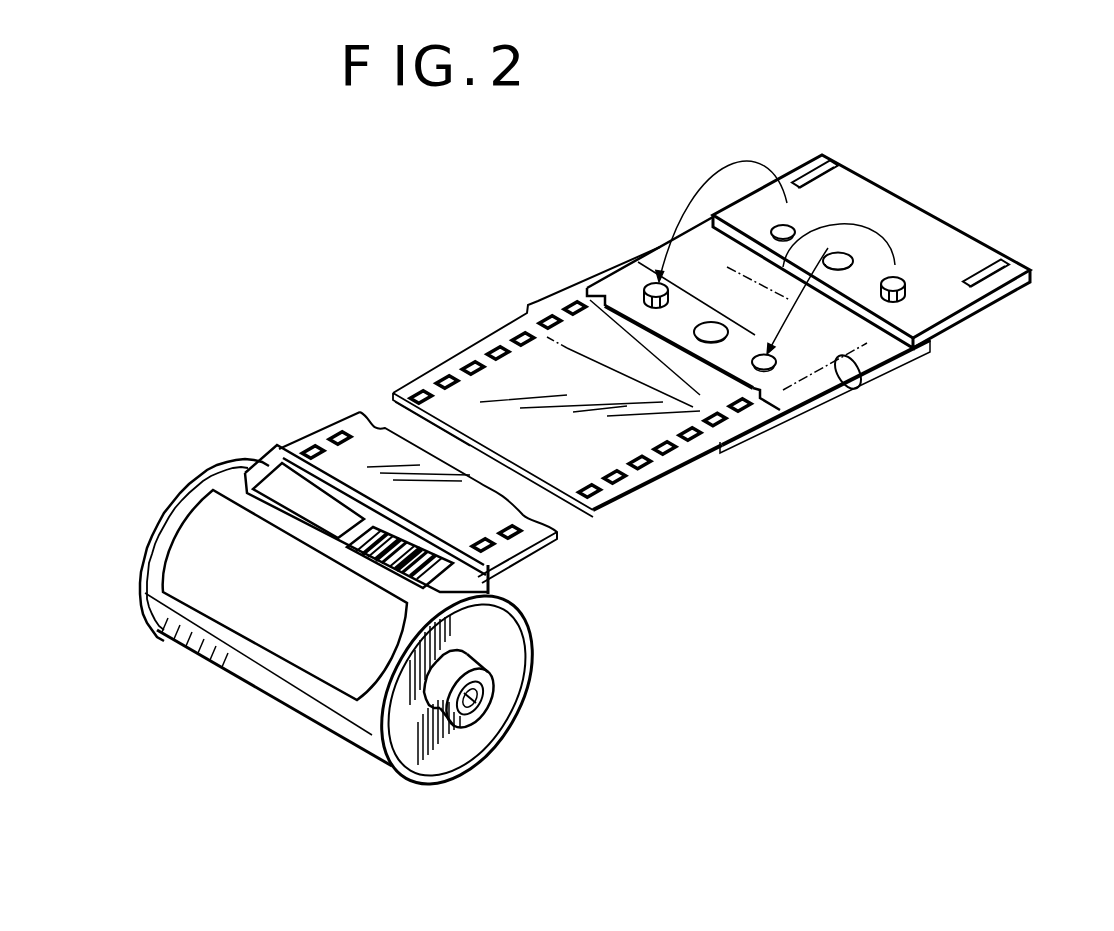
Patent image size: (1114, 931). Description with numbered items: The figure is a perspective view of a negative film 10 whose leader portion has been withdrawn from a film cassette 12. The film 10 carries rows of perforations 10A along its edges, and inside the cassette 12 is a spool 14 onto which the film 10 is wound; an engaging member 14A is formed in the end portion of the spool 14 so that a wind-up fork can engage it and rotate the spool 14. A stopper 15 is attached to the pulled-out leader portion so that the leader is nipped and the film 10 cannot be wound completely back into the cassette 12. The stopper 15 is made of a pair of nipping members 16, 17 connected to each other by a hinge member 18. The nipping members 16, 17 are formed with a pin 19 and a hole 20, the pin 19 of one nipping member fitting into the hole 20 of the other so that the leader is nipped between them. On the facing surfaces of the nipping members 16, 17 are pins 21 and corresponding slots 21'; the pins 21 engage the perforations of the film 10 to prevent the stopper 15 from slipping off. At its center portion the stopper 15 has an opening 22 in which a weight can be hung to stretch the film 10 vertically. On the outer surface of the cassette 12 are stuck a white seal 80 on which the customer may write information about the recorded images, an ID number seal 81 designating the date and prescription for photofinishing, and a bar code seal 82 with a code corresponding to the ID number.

The film 10 is at (603, 512).
The perforations 10A is at (462, 365).
The film cassette 12 is at (302, 732).
The spool 14 is at (477, 720).
The engaging member 14A is at (470, 693).
The stopper 15 is at (812, 310).
The nipping member 16 is at (757, 430).
The nipping member 17 is at (983, 310).
The hinge member 18 is at (877, 370).
The pin 19 is at (903, 297).
The hole 20 is at (797, 228).
The pins 21 is at (532, 403).
The slots 21' is at (945, 191).
The opening 22 is at (853, 255).
The white seal 80 is at (253, 630).
The ID number seal 81 is at (277, 478).
The bar code seal 82 is at (372, 562).